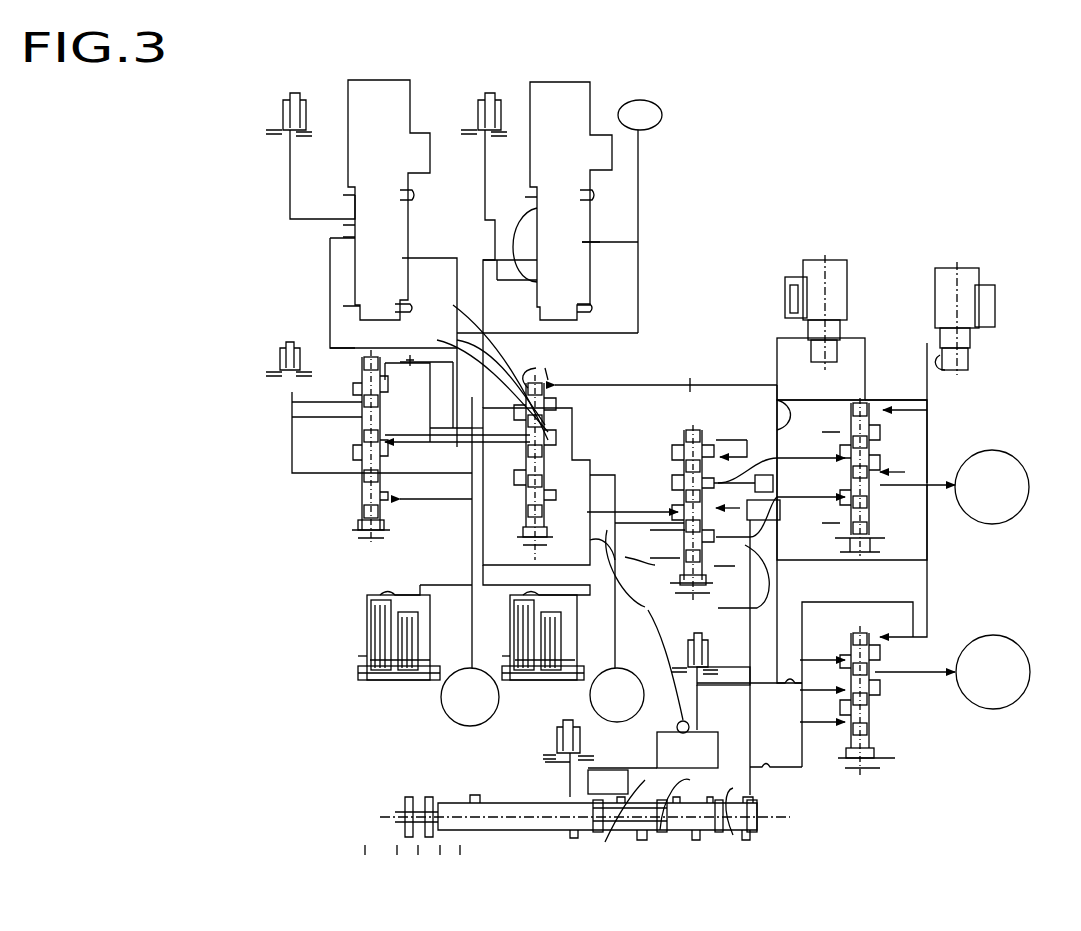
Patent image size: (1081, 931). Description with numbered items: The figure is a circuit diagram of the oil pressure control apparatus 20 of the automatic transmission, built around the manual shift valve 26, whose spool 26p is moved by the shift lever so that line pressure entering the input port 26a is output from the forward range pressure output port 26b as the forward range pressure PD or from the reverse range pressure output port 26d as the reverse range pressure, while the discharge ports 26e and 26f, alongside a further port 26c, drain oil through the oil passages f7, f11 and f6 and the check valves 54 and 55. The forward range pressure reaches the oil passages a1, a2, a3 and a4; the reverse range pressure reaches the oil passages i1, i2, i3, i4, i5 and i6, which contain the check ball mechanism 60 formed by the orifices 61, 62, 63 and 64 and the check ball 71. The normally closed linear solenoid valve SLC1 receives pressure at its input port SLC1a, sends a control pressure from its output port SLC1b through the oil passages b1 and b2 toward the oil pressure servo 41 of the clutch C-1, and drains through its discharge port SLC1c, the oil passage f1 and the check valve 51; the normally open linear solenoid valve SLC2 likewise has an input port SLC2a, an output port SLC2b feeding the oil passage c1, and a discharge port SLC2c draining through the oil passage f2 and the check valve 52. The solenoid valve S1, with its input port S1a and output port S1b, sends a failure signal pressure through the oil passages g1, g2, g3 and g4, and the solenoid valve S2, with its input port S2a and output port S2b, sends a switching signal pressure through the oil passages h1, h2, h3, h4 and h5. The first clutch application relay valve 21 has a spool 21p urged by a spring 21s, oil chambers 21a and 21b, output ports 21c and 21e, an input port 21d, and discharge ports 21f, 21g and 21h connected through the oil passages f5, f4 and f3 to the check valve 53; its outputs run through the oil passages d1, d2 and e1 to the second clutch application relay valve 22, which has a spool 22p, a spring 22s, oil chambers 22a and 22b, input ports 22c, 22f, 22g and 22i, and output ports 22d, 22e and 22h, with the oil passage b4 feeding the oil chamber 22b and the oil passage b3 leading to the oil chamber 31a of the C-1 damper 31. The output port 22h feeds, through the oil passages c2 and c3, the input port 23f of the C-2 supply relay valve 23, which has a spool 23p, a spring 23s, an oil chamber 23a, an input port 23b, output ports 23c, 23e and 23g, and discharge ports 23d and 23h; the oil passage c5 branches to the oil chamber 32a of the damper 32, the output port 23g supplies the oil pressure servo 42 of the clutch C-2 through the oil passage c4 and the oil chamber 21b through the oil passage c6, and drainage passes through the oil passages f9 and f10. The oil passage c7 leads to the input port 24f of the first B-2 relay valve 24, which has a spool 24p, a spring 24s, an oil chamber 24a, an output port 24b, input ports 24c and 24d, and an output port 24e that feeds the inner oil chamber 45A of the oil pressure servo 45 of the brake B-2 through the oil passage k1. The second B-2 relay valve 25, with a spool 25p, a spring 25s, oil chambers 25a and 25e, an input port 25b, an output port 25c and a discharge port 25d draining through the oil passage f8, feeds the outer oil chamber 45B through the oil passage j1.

The hydraulic control device 20 is at (702, 80).
The first clutch apply control valve 21 is at (358, 366).
The input port 21a is at (362, 370).
The port 21b is at (362, 500).
The port 21c is at (410, 418).
The port 21d is at (415, 447).
The port 21e is at (413, 485).
The port 21f is at (360, 420).
The port 21g is at (362, 428).
The port 21h is at (362, 497).
The spool 21p is at (360, 392).
The spring 21s is at (457, 398).
The second clutch apply control valve 22 is at (540, 378).
The port 22a is at (545, 388).
The port 22b is at (544, 553).
The port 22c is at (483, 352).
The port 22d is at (556, 410).
The port 22e is at (481, 366).
The port 22f is at (477, 379).
The port 22g is at (514, 477).
The port 22h is at (556, 455).
The port 22i is at (514, 500).
The spool 22p is at (528, 365).
The spring 22s is at (525, 512).
The B-2 apply control valve 23 is at (688, 430).
The port 23a is at (704, 433).
The port 23b is at (734, 435).
The port 23c is at (684, 458).
The port 23d is at (779, 491).
The port 23e is at (732, 517).
The port 23f is at (684, 505).
The port 23g is at (684, 530).
The port 23h is at (798, 538).
The spool 23p is at (684, 445).
The spring 23s is at (649, 581).
The B-2 inner relay valve 24 is at (848, 412).
The port 24a is at (864, 405).
The port 24b is at (840, 462).
The port 24c is at (840, 498).
The port 24d is at (902, 458).
The port 24e is at (870, 496).
The port 24f is at (824, 570).
The spool 24p is at (872, 415).
The spring 24s is at (902, 528).
The B-2 outer relay valve 25 is at (868, 636).
The port 25a is at (872, 645).
The port 25b is at (822, 672).
The port 25c is at (872, 677).
The port 25d is at (822, 701).
The port 25e is at (850, 722).
The spool 25p is at (851, 645).
The spring 25s is at (872, 708).
The manual shift valve 26 is at (623, 834).
The port 26a is at (610, 819).
The line pressure input port 26b is at (667, 819).
The port 26c is at (748, 821).
The port 26d is at (608, 782).
The port 26e is at (758, 795).
The port 26f is at (570, 795).
The spool 26p is at (694, 828).
The C-1 accumulator 31 is at (372, 590).
The accumulator port 31a is at (408, 595).
The C-2 accumulator 32 is at (515, 588).
The accumulator port 32a is at (560, 598).
The C-1 hydraulic servo 41 is at (472, 666).
The C-2 hydraulic servo 42 is at (620, 667).
The B-2 hydraulic servo 45 is at (1012, 548).
The B-2 inner hydraulic servo 45A is at (990, 526).
The B-2 outer hydraulic servo 45B is at (990, 633).
The check ball valve 51 is at (274, 114).
The check ball valve 52 is at (469, 112).
The check ball valve 53 is at (272, 352).
The check ball valve 54 is at (712, 650).
The check ball valve 55 is at (552, 747).
The orifice block 60 is at (655, 737).
The orifice 61 is at (674, 760).
The orifice 62 is at (704, 758).
The check ball 63 is at (680, 722).
The orifice 64 is at (704, 738).
The orifice 71 is at (698, 712).
The first linear solenoid valve SLC1 is at (348, 108).
The output port SLC1a is at (432, 245).
The input port SLC1b is at (345, 237).
The feedback port SLC1c is at (350, 215).
The second linear solenoid valve SLC2 is at (530, 108).
The input port SLC2a is at (592, 242).
The output port SLC2b is at (537, 208).
The feedback port SLC2c is at (530, 290).
The first solenoid valve (normally open) S1 is at (860, 262).
The output port S1a is at (821, 369).
The input port S1b is at (808, 338).
The second solenoid valve (normally closed) S2 is at (990, 265).
The output port S2a is at (945, 370).
The input port S2b is at (940, 340).
The D-range pressure PD is at (663, 113).
The B-2 brake servo B-2 is at (992, 579).
The C-1 clutch servo C-1 is at (470, 697).
The C-2 clutch servo C-2 is at (617, 695).
The oil passage a1 is at (638, 183).
The oil passage a2 is at (617, 246).
The oil passage a3 is at (457, 275).
The oil passage a4 is at (451, 415).
The oil passage b1 is at (332, 344).
The oil passage b2 is at (465, 550).
The oil passage b3 is at (468, 588).
The oil passage b4 is at (572, 432).
The oil passage c1 is at (483, 322).
The oil passage c2 is at (590, 478).
The oil passage c3 is at (598, 512).
The oil passage c4 is at (636, 560).
The oil passage c5 is at (644, 625).
The oil passage c6 is at (588, 547).
The oil passage c7 is at (763, 515).
The oil passage d1 is at (460, 447).
The oil passage d2 is at (453, 410).
The oil passage e1 is at (445, 499).
The oil passage f1 is at (290, 175).
The oil passage f2 is at (485, 180).
The oil passage f3 is at (360, 473).
The oil passage f4 is at (292, 435).
The oil passage f5 is at (292, 403).
The oil passage f6 is at (546, 774).
The oil passage f7 is at (750, 760).
The oil passage f8 is at (749, 666).
The oil passage f9 is at (764, 483).
The oil passage f10 is at (727, 582).
The oil passage f11 is at (716, 685).
The oil passage g1 is at (777, 375).
The oil passage g2 is at (720, 377).
The oil passage g3 is at (777, 392).
The oil passage g4 is at (795, 415).
The oil passage h1 is at (927, 383).
The oil passage h2 is at (890, 400).
The oil passage h3 is at (947, 433).
The oil passage h4 is at (927, 514).
The oil passage h5 is at (797, 568).
The oil passage i1 is at (622, 758).
The oil passage i2 is at (695, 751).
The oil passage i3 is at (703, 708).
The oil passage i4 is at (776, 758).
The oil passage i5 is at (816, 638).
The oil passage i6 is at (832, 603).
The oil passage j1 is at (934, 676).
The oil passage k1 is at (930, 485).